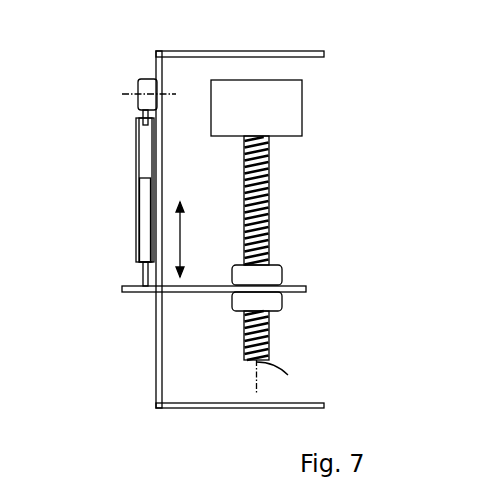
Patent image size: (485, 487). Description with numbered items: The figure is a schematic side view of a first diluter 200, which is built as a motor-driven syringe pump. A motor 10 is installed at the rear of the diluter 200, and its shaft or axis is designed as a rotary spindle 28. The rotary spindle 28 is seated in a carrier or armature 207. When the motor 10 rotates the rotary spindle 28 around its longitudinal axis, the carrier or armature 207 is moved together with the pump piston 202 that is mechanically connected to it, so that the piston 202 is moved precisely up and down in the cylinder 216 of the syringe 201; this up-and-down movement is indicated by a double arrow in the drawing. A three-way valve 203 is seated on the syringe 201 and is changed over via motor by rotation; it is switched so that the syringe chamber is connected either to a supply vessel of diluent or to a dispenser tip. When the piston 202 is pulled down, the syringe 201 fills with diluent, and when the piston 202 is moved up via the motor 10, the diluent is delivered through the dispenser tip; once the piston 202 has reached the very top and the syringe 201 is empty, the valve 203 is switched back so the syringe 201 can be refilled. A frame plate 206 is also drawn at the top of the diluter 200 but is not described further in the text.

The diluter 200 is at (413, 60).
The frame top plate 206 is at (194, 57).
The three-way valve 203 is at (138, 83).
The cylinder 216 is at (136, 138).
The syringe 201 is at (122, 192).
The piston 202 is at (136, 262).
The motor 10 is at (239, 118).
The rotary spindle 28 is at (268, 203).
The carrier or armature 207 is at (325, 288).